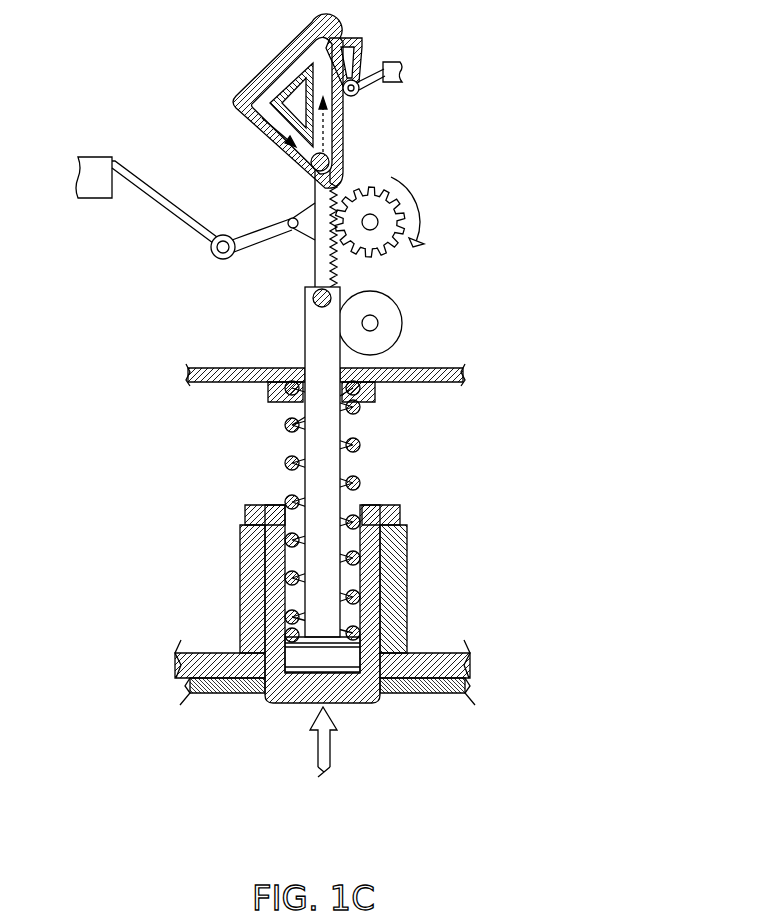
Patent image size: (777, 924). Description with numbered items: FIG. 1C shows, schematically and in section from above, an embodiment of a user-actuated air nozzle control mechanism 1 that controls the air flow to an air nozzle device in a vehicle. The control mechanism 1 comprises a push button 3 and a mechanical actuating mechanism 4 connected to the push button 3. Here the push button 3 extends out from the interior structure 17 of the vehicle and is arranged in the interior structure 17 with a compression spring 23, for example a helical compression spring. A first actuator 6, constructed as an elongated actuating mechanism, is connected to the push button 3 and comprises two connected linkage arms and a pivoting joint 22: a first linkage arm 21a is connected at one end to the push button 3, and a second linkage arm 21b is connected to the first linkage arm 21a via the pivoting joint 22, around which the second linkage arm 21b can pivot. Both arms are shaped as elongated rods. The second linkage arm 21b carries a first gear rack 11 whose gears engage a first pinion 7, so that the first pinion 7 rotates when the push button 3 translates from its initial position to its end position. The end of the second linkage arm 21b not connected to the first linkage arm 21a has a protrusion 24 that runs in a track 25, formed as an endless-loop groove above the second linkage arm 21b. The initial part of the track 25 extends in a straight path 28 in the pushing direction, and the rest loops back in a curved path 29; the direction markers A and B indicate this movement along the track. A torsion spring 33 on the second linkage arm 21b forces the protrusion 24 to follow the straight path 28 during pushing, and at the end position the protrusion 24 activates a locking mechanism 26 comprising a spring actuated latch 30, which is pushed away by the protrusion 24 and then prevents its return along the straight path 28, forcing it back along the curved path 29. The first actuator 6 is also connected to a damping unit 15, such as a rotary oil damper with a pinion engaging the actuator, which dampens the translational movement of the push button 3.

The air nozzle control mechanism 1 is at (150, 68).
The push button 3 is at (284, 705).
The mechanical actuating mechanism 4 is at (505, 95).
The first actuator 6 is at (323, 488).
The first pinion 7 is at (385, 222).
The first gear rack 11 is at (313, 272).
The damping unit 15 is at (378, 323).
The interior structure 17 is at (212, 665).
The first linkage arm 21a is at (367, 535).
The second linkage arm 21b is at (315, 200).
The pivoting joint 22 is at (313, 300).
The compression spring 23 is at (362, 483).
The protrusion 24 is at (343, 153).
The track 25 is at (322, 42).
The locking mechanism 26 is at (405, 66).
The straight path 28 is at (343, 128).
The curved path 29 is at (308, 55).
The spring actuated latch 30 is at (362, 43).
The torsion spring 33 is at (162, 228).
The direction A is at (346, 113).
The cam follower B is at (273, 83).